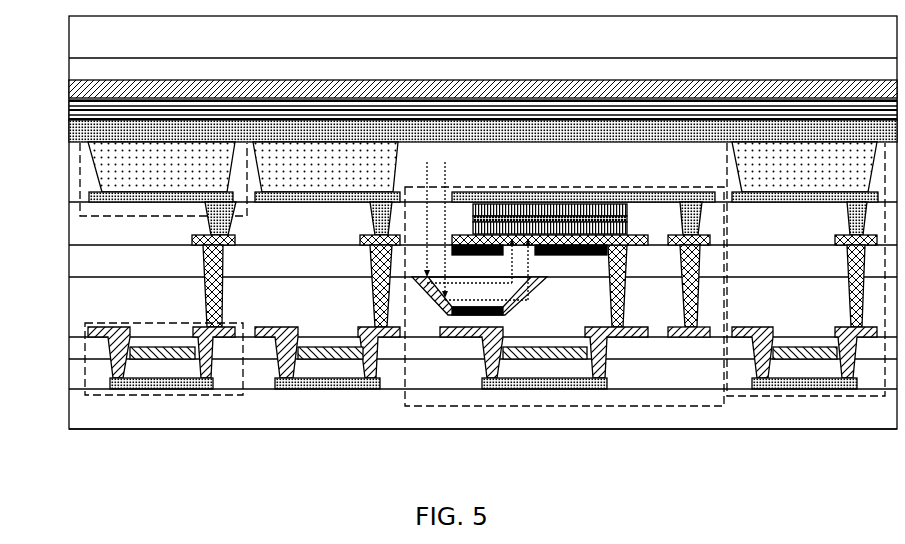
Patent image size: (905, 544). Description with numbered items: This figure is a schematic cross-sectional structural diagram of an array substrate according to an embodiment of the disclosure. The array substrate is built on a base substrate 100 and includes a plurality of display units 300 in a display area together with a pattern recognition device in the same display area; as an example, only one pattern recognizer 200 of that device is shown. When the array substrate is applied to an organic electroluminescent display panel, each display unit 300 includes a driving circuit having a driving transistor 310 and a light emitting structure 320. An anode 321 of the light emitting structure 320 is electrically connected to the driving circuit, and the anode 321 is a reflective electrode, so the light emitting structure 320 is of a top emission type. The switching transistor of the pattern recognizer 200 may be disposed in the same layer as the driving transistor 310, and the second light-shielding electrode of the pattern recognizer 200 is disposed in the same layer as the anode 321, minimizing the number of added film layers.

The base substrate 100 is at (108, 413).
The pattern recognizer 200 is at (613, 406).
The display unit 300 is at (812, 396).
The driving transistor 310 is at (157, 395).
The light emitting structure 320 is at (80, 162).
The anode 321 is at (110, 205).